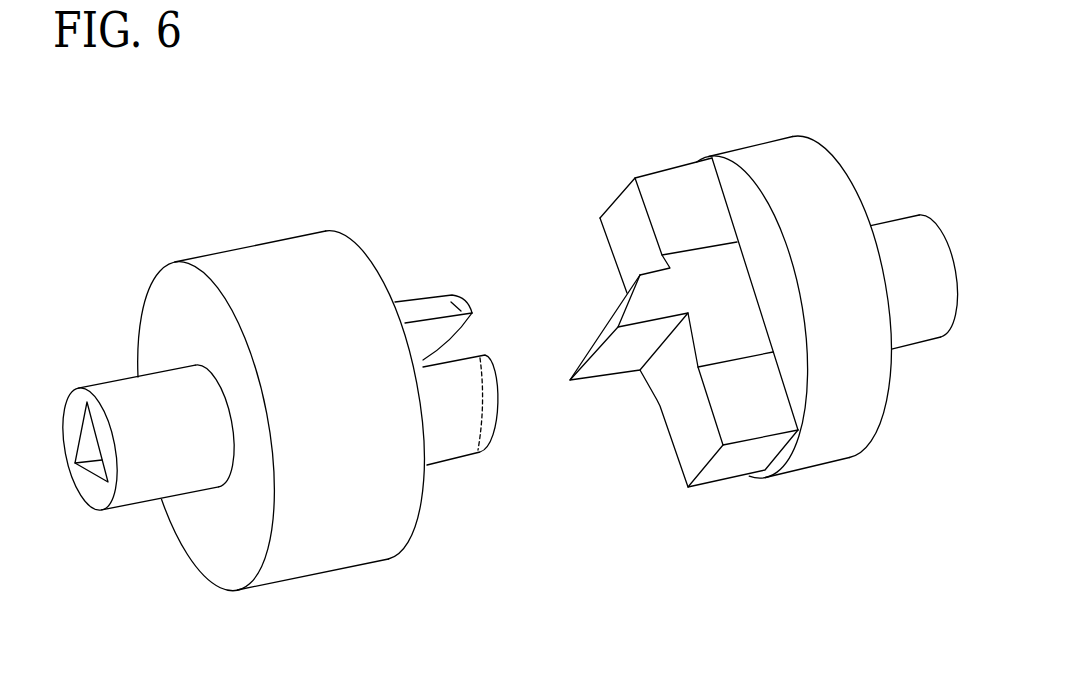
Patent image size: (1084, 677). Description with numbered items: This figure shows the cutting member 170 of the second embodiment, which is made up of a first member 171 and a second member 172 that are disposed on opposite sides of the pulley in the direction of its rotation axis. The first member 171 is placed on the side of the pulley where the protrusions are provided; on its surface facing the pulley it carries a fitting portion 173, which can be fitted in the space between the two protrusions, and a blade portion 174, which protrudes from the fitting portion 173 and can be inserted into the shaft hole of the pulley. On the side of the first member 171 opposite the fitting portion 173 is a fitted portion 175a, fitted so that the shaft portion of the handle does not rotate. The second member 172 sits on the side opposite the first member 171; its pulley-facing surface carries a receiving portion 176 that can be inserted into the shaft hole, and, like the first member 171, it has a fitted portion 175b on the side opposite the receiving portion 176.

The cutting member 170 is at (496, 118).
The first member 171 is at (748, 135).
The second member 172 is at (257, 235).
The fitting portion 173 is at (677, 193).
The blade portion 174 is at (622, 357).
The fitted portion 175a is at (893, 240).
The fitted portion 175b is at (147, 478).
The receiving portion 176 is at (427, 302).